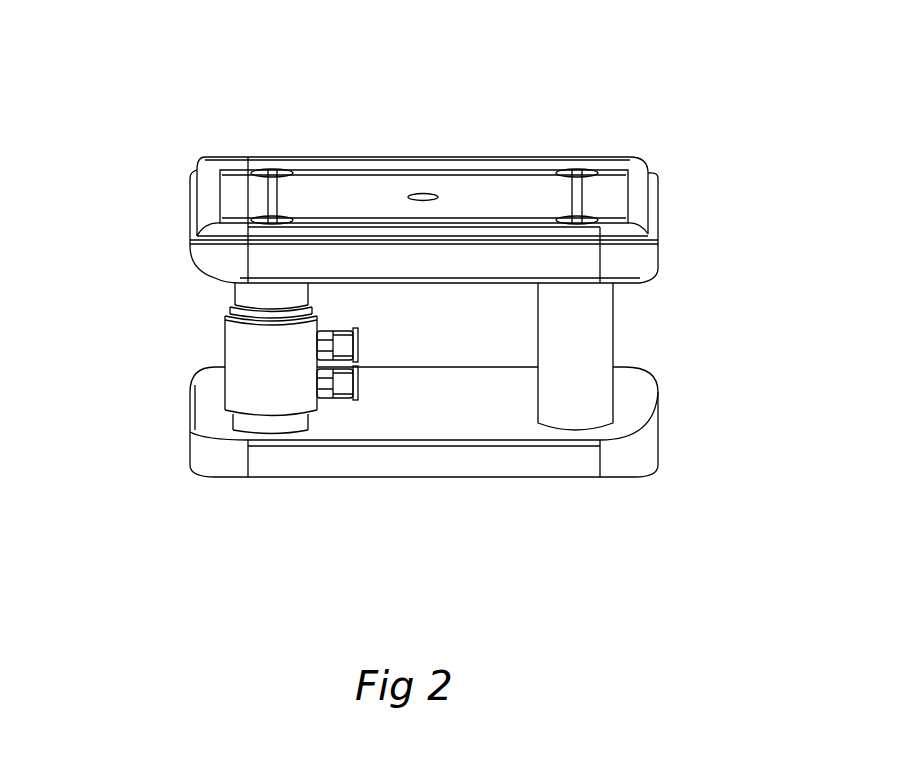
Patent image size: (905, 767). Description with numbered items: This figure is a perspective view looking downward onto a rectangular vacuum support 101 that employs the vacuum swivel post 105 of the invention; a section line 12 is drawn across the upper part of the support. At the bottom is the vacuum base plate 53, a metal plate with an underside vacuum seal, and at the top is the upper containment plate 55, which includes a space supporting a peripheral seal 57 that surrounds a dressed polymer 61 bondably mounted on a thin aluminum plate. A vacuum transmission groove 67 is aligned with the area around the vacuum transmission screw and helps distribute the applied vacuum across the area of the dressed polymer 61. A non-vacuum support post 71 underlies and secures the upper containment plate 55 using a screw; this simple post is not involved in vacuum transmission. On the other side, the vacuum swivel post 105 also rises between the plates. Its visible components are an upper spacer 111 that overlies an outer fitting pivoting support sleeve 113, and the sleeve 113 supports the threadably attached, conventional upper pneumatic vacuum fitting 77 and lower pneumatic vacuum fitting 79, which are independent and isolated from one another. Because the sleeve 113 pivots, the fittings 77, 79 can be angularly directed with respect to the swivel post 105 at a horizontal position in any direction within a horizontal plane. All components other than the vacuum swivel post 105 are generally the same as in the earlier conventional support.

The vacuum support 101 is at (598, 115).
The section line 12- 12 is at (395, 262).
The vacuum base plate 53 is at (627, 460).
The upper containment plate 55 is at (627, 263).
The peripheral seal 57 is at (643, 212).
The dressed polymer 61 is at (475, 190).
The vacuum transmission groove 67 is at (640, 160).
The non-vacuum support post 71 is at (593, 348).
The upper pneumatic vacuum fitting 77 is at (362, 345).
The lower pneumatic vacuum fitting 79 is at (360, 387).
The vacuum swivel post 105 is at (160, 339).
The upper spacer 111 is at (235, 292).
The outer fitting pivoting support sleeve 113 is at (252, 397).